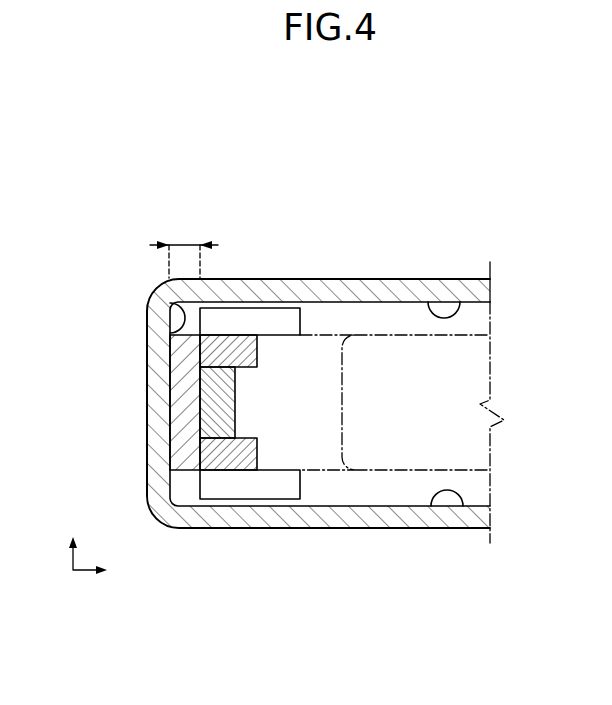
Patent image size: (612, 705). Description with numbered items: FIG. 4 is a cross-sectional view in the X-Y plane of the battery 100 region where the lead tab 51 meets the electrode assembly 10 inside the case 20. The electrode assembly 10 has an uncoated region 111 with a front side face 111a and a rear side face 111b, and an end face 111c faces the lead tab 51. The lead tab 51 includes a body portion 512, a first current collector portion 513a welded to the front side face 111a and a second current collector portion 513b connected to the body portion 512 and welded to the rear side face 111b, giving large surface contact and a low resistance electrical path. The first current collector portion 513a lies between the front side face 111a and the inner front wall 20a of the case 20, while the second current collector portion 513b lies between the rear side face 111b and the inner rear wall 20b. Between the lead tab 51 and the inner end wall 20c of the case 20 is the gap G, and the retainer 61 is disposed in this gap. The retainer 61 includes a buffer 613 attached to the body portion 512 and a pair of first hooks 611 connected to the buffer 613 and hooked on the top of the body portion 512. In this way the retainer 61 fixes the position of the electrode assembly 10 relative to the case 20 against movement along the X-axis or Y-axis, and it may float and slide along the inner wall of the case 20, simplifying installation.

The electronic device 100 is at (351, 146).
The electrode assembly 10 is at (467, 365).
The case 20 is at (405, 288).
The inner front wall 20a is at (462, 510).
The inner rear wall 20b is at (460, 300).
The inner end wall 20c is at (170, 312).
The lead tab 51 is at (188, 437).
The body portion 512 is at (210, 430).
The first current collector portion 513a is at (218, 488).
The second current collector portion 513b is at (287, 318).
The retainer 61 is at (143, 469).
The first hooks 611 is at (207, 357).
The buffer 613 is at (182, 395).
The uncoated region 111 is at (332, 444).
The front side face 111a is at (323, 472).
The rear side face 111b is at (333, 335).
The third virtual line 111c is at (234, 350).